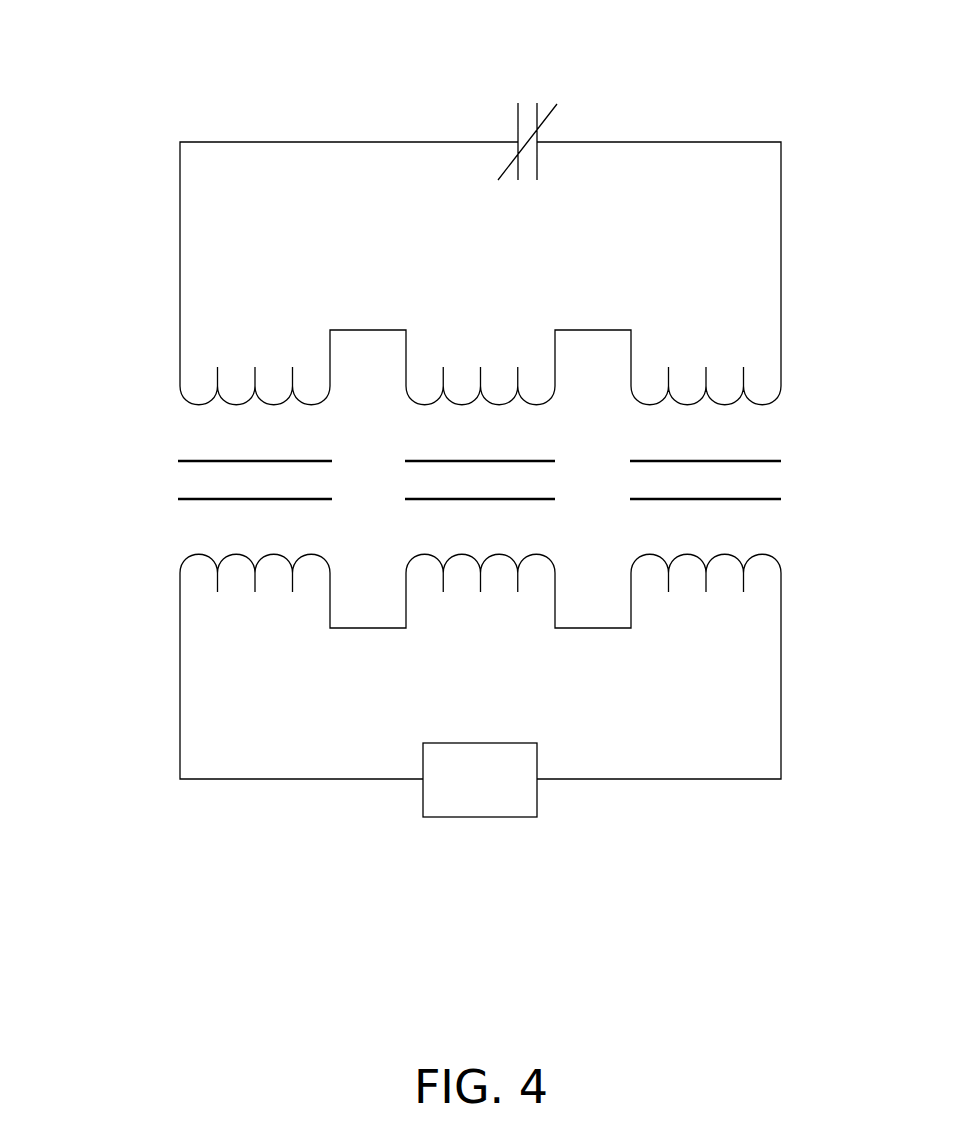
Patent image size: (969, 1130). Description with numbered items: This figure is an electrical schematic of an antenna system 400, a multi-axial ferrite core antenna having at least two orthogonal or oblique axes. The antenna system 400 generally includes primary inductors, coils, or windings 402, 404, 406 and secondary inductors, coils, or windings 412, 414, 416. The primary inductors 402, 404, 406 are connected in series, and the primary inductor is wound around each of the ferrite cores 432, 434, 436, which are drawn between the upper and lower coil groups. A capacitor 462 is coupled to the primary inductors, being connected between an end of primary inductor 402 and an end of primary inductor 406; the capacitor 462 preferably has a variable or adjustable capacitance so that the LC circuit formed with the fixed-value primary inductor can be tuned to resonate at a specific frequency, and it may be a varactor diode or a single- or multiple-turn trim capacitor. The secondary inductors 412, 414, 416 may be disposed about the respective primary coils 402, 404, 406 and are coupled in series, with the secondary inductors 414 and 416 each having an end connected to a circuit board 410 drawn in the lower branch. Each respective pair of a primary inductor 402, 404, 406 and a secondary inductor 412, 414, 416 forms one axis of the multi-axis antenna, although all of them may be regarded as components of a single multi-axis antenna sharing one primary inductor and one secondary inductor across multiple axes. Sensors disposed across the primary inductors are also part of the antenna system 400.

The antenna system 400 is at (180, 67).
The capacitor 462 is at (528, 82).
The primary inductor 402 is at (255, 345).
The primary inductor 404 is at (480, 345).
The primary inductor 406 is at (705, 345).
The ferrite core 432 is at (292, 461).
The ferrite core 434 is at (517, 461).
The ferrite core 436 is at (743, 461).
The secondary inductor 412 is at (255, 610).
The secondary inductor 414 is at (480, 610).
The secondary inductor 416 is at (705, 610).
The circuit board 410 is at (443, 797).